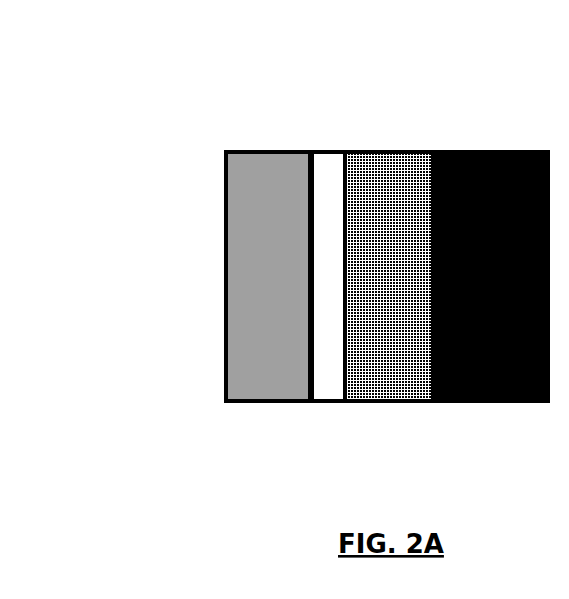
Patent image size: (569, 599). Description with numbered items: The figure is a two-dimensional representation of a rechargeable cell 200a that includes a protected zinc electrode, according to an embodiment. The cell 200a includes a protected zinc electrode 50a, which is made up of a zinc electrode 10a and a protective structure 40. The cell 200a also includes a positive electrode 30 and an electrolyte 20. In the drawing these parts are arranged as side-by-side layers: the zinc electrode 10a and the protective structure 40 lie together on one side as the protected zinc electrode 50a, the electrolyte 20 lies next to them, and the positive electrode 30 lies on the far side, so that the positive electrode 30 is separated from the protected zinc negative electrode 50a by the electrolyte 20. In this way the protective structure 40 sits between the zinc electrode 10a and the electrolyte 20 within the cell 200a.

The rechargeable cell 200a is at (308, 242).
The zinc electrode 10a is at (225, 338).
The protective structure 40 is at (325, 151).
The electrolyte 20 is at (389, 151).
The positive electrode 30 is at (509, 151).
The protected zinc electrode 50a is at (256, 276).